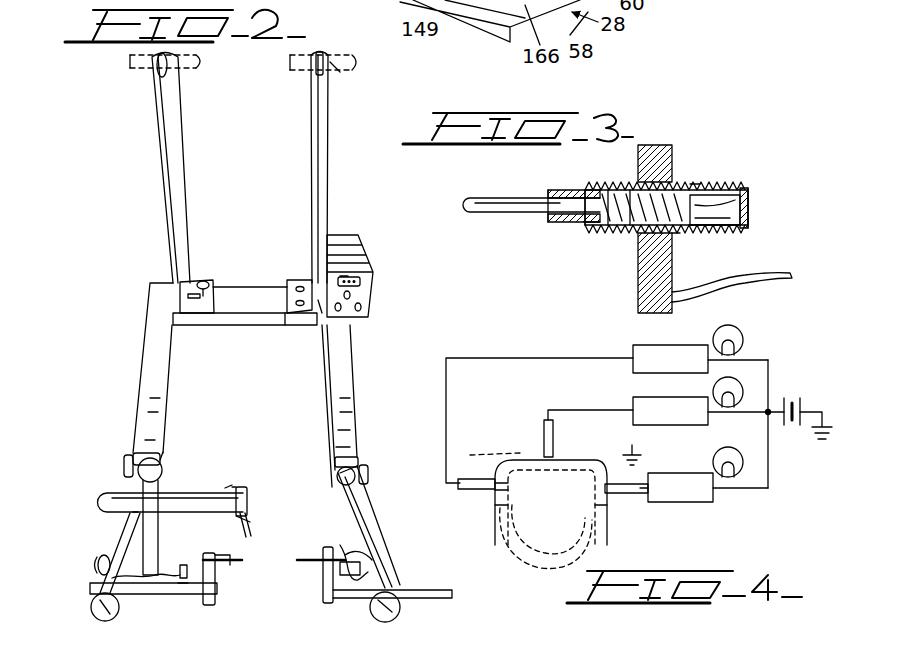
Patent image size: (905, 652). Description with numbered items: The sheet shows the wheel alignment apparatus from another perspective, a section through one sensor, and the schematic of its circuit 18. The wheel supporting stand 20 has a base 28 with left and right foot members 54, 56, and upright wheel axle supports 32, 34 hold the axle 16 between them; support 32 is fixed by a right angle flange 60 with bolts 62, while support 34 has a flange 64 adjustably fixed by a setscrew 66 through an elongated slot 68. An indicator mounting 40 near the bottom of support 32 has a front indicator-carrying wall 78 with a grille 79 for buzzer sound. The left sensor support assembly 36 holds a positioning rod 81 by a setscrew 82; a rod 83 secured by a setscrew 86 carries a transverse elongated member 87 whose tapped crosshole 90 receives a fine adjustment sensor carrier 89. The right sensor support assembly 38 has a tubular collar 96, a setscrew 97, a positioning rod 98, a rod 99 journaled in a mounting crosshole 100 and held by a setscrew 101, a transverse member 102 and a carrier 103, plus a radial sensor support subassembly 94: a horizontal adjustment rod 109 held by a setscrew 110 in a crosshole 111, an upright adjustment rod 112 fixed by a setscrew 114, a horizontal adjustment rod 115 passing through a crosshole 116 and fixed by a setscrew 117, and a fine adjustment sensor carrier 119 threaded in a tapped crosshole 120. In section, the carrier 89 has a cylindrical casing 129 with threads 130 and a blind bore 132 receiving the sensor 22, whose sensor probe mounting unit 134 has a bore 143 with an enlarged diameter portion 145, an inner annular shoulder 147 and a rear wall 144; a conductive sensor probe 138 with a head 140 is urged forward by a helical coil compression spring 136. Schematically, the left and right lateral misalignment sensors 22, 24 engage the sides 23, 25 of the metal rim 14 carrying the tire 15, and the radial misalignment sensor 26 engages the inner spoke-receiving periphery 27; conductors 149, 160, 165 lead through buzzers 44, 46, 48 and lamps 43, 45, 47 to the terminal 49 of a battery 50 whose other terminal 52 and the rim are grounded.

In FIG. 4, the metal rim 14 is at (592, 454).
In FIG. 4, the tire 15 is at (533, 568).
In FIG. 2, the metal axle 16 is at (340, 72).
In FIG. 4, the circuit 18 is at (560, 344).
In FIG. 2, the wheel supporting stand 20 is at (143, 297).
In FIG. 2, the left lateral misalignment sensor 22 is at (322, 558).
In FIG. 3, the left lateral misalignment sensor 22 is at (558, 265).
In FIG. 4, the left lateral misalignment sensor 22 is at (616, 495).
In FIG. 4, the side of the rim 23 is at (599, 524).
In FIG. 2, the right lateral misalignment sensor 24 is at (236, 560).
In FIG. 4, the right lateral misalignment sensor 24 is at (484, 490).
In FIG. 4, the side of the rim 25 is at (500, 522).
In FIG. 2, the radial misalignment sensor 26 is at (254, 521).
In FIG. 4, the radial misalignment sensor 26 is at (544, 438).
In FIG. 4, the inner spoke-receiving periphery 27 is at (520, 455).
In FIG. 2, the base 28 is at (255, 274).
In FIG. 2, the right upright wheel axle support 32 is at (331, 164).
In FIG. 2, the left upright wheel axle support 34 is at (152, 146).
In FIG. 2, the left sensor support assembly 36 is at (374, 505).
In FIG. 2, the right sensor support assembly 38 is at (97, 523).
In FIG. 2, the indicator mounting 40 is at (375, 268).
In FIG. 2, the right alignment indicating lamp 43 is at (362, 308).
In FIG. 4, the right alignment indicating lamp 43 is at (721, 450).
In FIG. 4, the buzzer 44 is at (687, 473).
In FIG. 2, the left alignment indicating lamp 45 is at (328, 312).
In FIG. 4, the left alignment indicating lamp 45 is at (740, 331).
In FIG. 4, the buzzer 46 is at (633, 345).
In FIG. 2, the radial alignment indicating lamp 47 is at (351, 296).
In FIG. 4, the radial alignment indicating lamp 47 is at (721, 380).
In FIG. 4, the buzzer 48 is at (634, 398).
In FIG. 4, the terminal 49 is at (771, 416).
In FIG. 4, the battery 50 is at (787, 398).
In FIG. 4, the terminal 52 is at (810, 406).
In FIG. 2, the left foot member 54 is at (358, 406).
In FIG. 2, the right foot member 56 is at (147, 370).
In FIG. 2, the right angle flange 60 is at (297, 314).
In FIG. 2, the bolts 62 is at (300, 286).
In FIG. 2, the right angle flange 64 is at (214, 281).
In FIG. 2, the setscrew 66 is at (203, 281).
In FIG. 2, the elongated slot 68 is at (194, 298).
In FIG. 2, the front indicator-carrying wall 78 is at (348, 276).
In FIG. 2, the grille 79 is at (362, 281).
In FIG. 2, the cylindrical positioning rod 81 is at (381, 540).
In FIG. 2, the setscrew 82 is at (368, 468).
In FIG. 2, the cylindrical rod 83 is at (436, 588).
In FIG. 2, the setscrew 86 is at (394, 615).
In FIG. 2, the transverse elongated member 87 is at (323, 597).
In FIG. 3, the transverse elongated member 87 is at (660, 147).
In FIG. 2, the fine adjustment sensor carrier 89 is at (340, 545).
In FIG. 3, the fine adjustment sensor carrier 89 is at (746, 162).
In FIG. 2, the tapped crosshole 90 is at (320, 576).
In FIG. 3, the tapped crosshole 90 is at (676, 235).
In FIG. 2, the radial sensor support subassembly 94 is at (176, 462).
In FIG. 2, the tubular collar 96 is at (148, 455).
In FIG. 2, the setscrew 97 is at (127, 468).
In FIG. 2, the cylindrical positioning rod 98 is at (109, 555).
In FIG. 2, the cylindrical rod 99 is at (165, 592).
In FIG. 2, the mounting crosshole 100 is at (112, 612).
In FIG. 2, the setscrew 101 is at (91, 612).
In FIG. 2, the transverse elongated member 102 is at (215, 602).
In FIG. 2, the fine adjustment sensor carrier 103 is at (195, 565).
In FIG. 2, the cylindrical horizontal adjustment rod 109 is at (135, 590).
In FIG. 2, the setscrew 110 is at (98, 571).
In FIG. 2, the crosshole 111 is at (95, 565).
In FIG. 2, the cylindrical upright adjustment rod 112 is at (163, 481).
In FIG. 2, the setscrew 114 is at (188, 587).
In FIG. 2, the cylindrical horizontal adjustment rod 115 is at (210, 497).
In FIG. 2, the crosshole 116 is at (160, 503).
In FIG. 2, the setscrew 117 is at (163, 448).
In FIG. 2, the fine adjustment sensor carrier 119 is at (248, 487).
In FIG. 2, the tapped crosshole 120 is at (249, 507).
In FIG. 3, the cylindrical casing 129 is at (750, 209).
In FIG. 3, the threads 130 is at (699, 182).
In FIG. 3, the blind bore 132 is at (740, 231).
In FIG. 3, the sensor probe mounting unit 134 is at (548, 193).
In FIG. 3, the helical coil compression spring 136 is at (632, 188).
In FIG. 3, the sensor probe 138 is at (484, 206).
In FIG. 3, the head 140 is at (598, 226).
In FIG. 3, the bore 143 is at (561, 222).
In FIG. 3, the rear wall 144 is at (750, 190).
In FIG. 3, the enlarged diameter portion 145 is at (634, 233).
In FIG. 3, the inner annular shoulder 147 is at (594, 190).
In FIG. 2, the conductor 149 is at (371, 560).
In FIG. 3, the conductor 149 is at (778, 282).
In FIG. 4, the conductor 149 is at (648, 493).
In FIG. 2, the conductor 160 is at (192, 586).
In FIG. 4, the conductor 160 is at (447, 392).
In FIG. 2, the conductor 165 is at (237, 488).
In FIG. 4, the conductor 165 is at (575, 410).